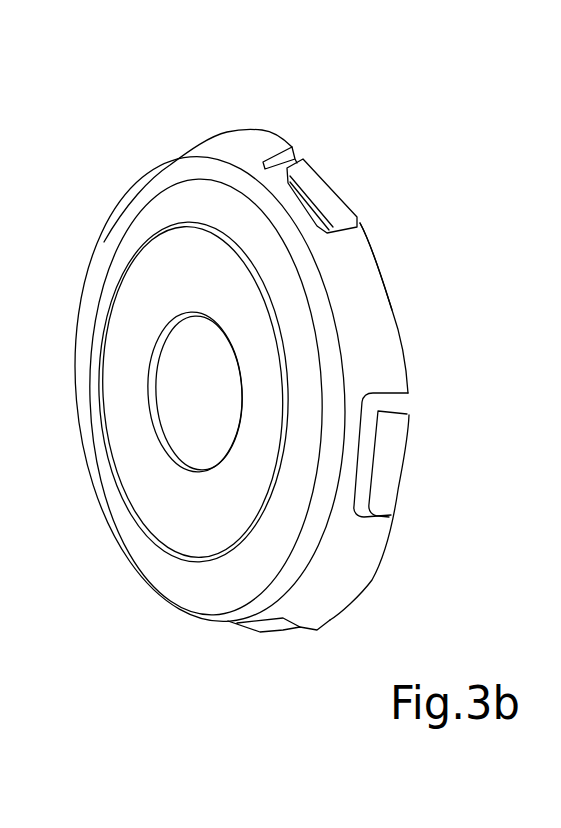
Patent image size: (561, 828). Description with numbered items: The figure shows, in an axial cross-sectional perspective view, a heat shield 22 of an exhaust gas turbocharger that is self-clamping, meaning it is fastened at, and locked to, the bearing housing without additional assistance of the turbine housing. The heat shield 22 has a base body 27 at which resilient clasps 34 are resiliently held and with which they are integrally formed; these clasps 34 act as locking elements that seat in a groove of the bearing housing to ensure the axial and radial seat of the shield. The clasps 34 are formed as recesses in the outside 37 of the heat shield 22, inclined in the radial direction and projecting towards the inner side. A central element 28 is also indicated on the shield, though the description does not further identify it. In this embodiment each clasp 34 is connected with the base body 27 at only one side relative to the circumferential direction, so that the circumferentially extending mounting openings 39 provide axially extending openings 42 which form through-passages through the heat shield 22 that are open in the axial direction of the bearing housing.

The heat shield 22 is at (185, 696).
The base body 27 is at (167, 250).
The central boss 28 is at (190, 395).
The resilient clasps 34 is at (348, 168).
The outside 37 is at (238, 147).
The mounting openings 39 is at (337, 247).
The openings 42 is at (303, 137).